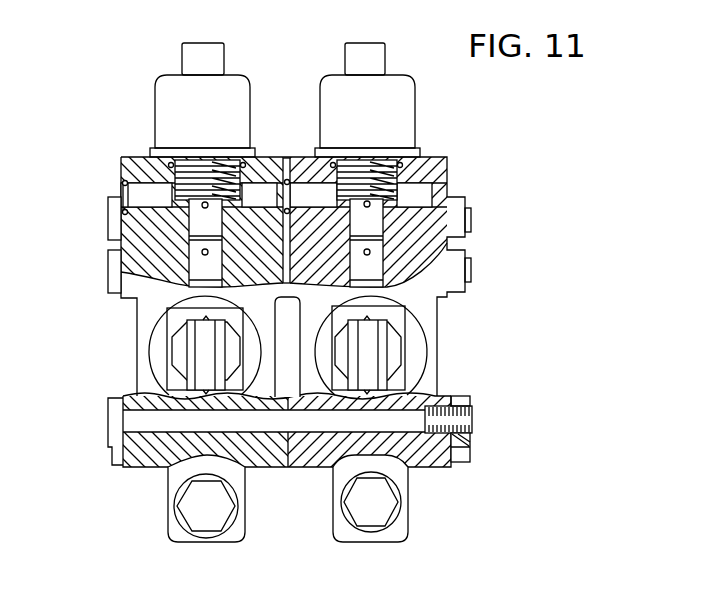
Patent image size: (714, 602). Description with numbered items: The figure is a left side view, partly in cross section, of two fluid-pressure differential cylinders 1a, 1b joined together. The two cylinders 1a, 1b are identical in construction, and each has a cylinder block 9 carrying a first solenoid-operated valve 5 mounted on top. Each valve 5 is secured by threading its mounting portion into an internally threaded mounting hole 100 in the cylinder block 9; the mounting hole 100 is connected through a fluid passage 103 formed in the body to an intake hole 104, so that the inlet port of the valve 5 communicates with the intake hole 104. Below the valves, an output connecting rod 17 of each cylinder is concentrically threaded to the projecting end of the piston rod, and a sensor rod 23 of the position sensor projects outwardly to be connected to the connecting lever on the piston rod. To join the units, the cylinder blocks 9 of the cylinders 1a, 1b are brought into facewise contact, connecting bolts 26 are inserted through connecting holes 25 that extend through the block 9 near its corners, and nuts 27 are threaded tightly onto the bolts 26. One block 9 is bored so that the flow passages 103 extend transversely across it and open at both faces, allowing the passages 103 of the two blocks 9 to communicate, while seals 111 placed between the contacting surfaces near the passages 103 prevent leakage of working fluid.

The fluid-pressure differential cylinder 1a is at (319, 75).
The fluid-pressure differential cylinder 1b is at (138, 89).
The first solenoid-operated valve 5 is at (170, 89).
The cylinder block 9 is at (137, 262).
The output connecting rod 17 is at (192, 348).
The sensor rod 23 is at (460, 237).
The connecting hole 25 is at (155, 430).
The connecting bolt 26 is at (112, 228).
The nut 27 is at (463, 438).
The mounting hole 100 is at (242, 200).
The fluid passage 103 is at (155, 197).
The intake hole 104 is at (304, 187).
The seal 111 is at (287, 178).